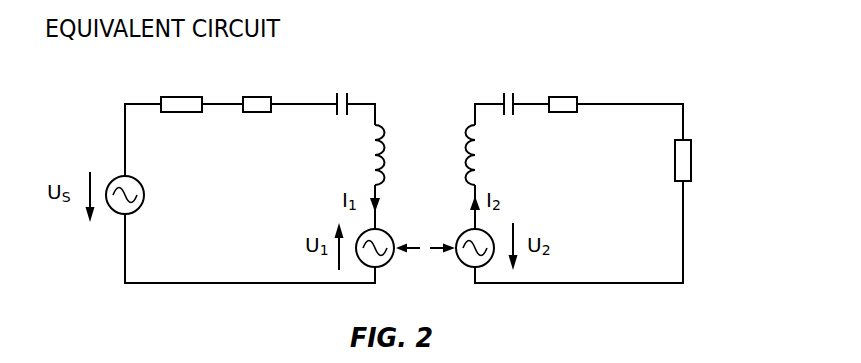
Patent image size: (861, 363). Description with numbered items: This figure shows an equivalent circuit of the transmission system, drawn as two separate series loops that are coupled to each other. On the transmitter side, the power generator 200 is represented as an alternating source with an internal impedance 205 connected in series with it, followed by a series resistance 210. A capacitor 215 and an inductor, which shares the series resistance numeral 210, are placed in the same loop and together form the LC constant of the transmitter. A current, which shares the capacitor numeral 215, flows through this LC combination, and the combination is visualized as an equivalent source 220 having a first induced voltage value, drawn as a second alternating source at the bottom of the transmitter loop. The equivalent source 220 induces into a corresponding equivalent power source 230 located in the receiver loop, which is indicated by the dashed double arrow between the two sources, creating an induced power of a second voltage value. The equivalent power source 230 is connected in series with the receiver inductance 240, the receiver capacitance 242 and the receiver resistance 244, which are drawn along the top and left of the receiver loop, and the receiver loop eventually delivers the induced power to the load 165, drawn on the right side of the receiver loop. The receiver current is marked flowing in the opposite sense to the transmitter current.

The power generator 200 is at (142, 203).
The internal impedance Zs 205 is at (187, 112).
The series resistance R1 and inductor L1 210 is at (262, 112).
The capacitor C1 and current I1 215 is at (345, 114).
The equivalent source U1 220 is at (384, 264).
The equivalent power source U2 230 is at (480, 266).
The inductance L2 240 is at (477, 175).
The capacitance C2 242 is at (513, 116).
The resistance R2 244 is at (565, 113).
The load 165 is at (685, 182).